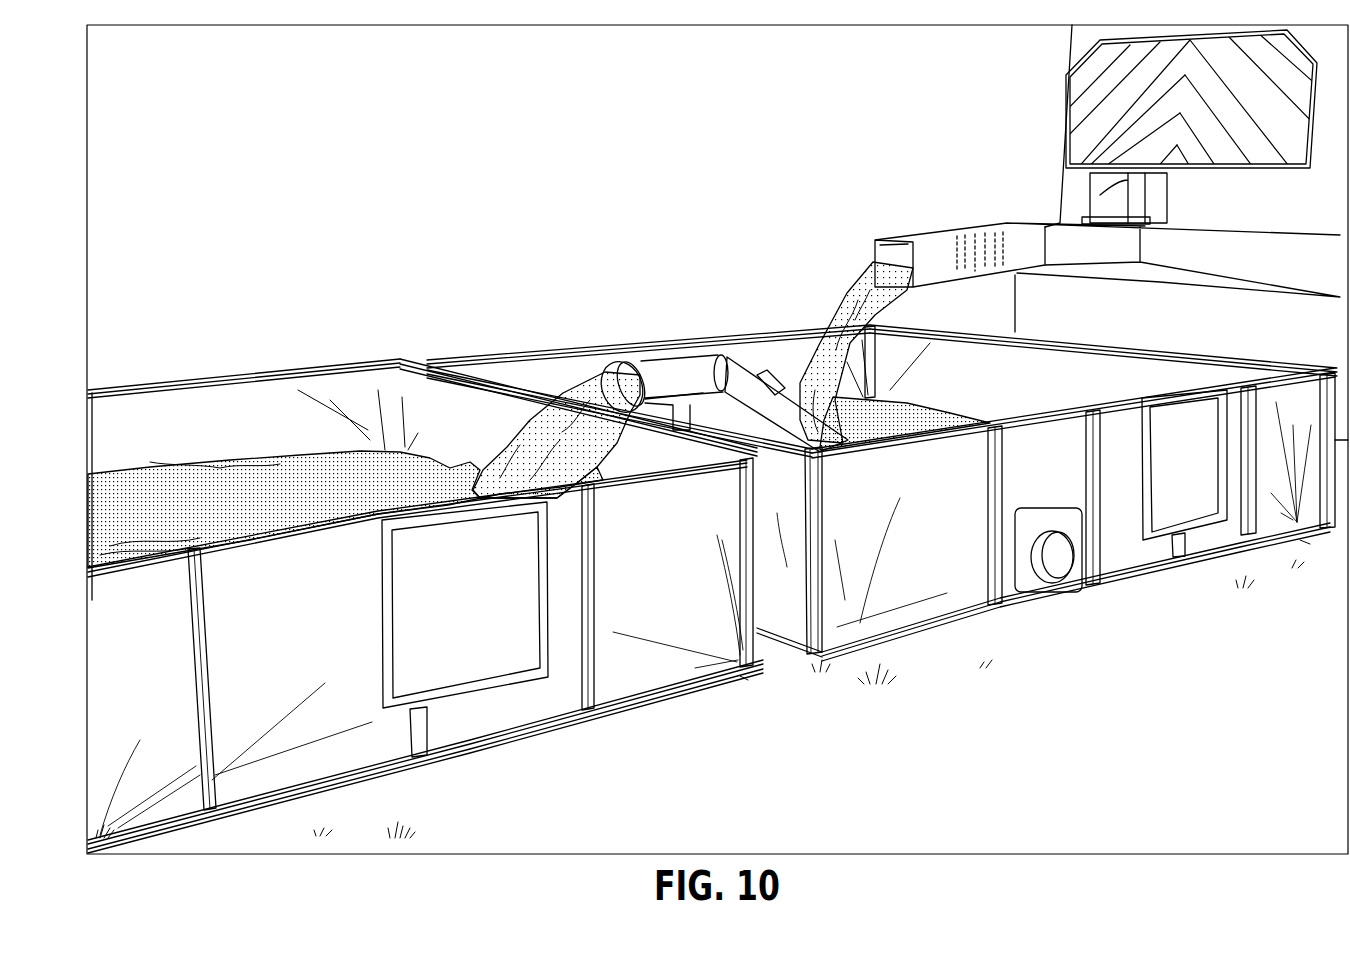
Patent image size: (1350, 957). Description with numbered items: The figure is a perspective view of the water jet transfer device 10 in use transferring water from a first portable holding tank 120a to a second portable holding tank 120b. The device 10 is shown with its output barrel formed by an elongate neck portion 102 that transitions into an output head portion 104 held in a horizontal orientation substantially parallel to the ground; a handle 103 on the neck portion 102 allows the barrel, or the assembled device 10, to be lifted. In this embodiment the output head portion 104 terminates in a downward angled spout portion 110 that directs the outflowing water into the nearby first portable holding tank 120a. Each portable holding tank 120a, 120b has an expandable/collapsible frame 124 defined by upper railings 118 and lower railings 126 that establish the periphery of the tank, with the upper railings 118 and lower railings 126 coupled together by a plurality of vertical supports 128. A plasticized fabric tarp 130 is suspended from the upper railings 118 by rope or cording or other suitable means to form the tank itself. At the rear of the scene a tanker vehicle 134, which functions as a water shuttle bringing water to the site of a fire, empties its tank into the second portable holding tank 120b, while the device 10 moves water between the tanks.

The water jet transfer device 10 is at (729, 307).
The elongate neck portion 102 is at (727, 397).
The handle 103 is at (777, 383).
The output head portion 104 is at (663, 367).
The downward angled spout portion 110 is at (613, 367).
The upper railings 118 is at (343, 360).
The first portable holding tank 120a is at (442, 778).
The second portable holding tank 120b is at (1065, 614).
The expandable/collapsible frame 124 is at (641, 711).
The lower railings 126 is at (682, 691).
The vertical supports 128 is at (207, 685).
The plasticized fabric tarp 130 is at (645, 560).
The tanker vehicle 134 is at (1060, 200).